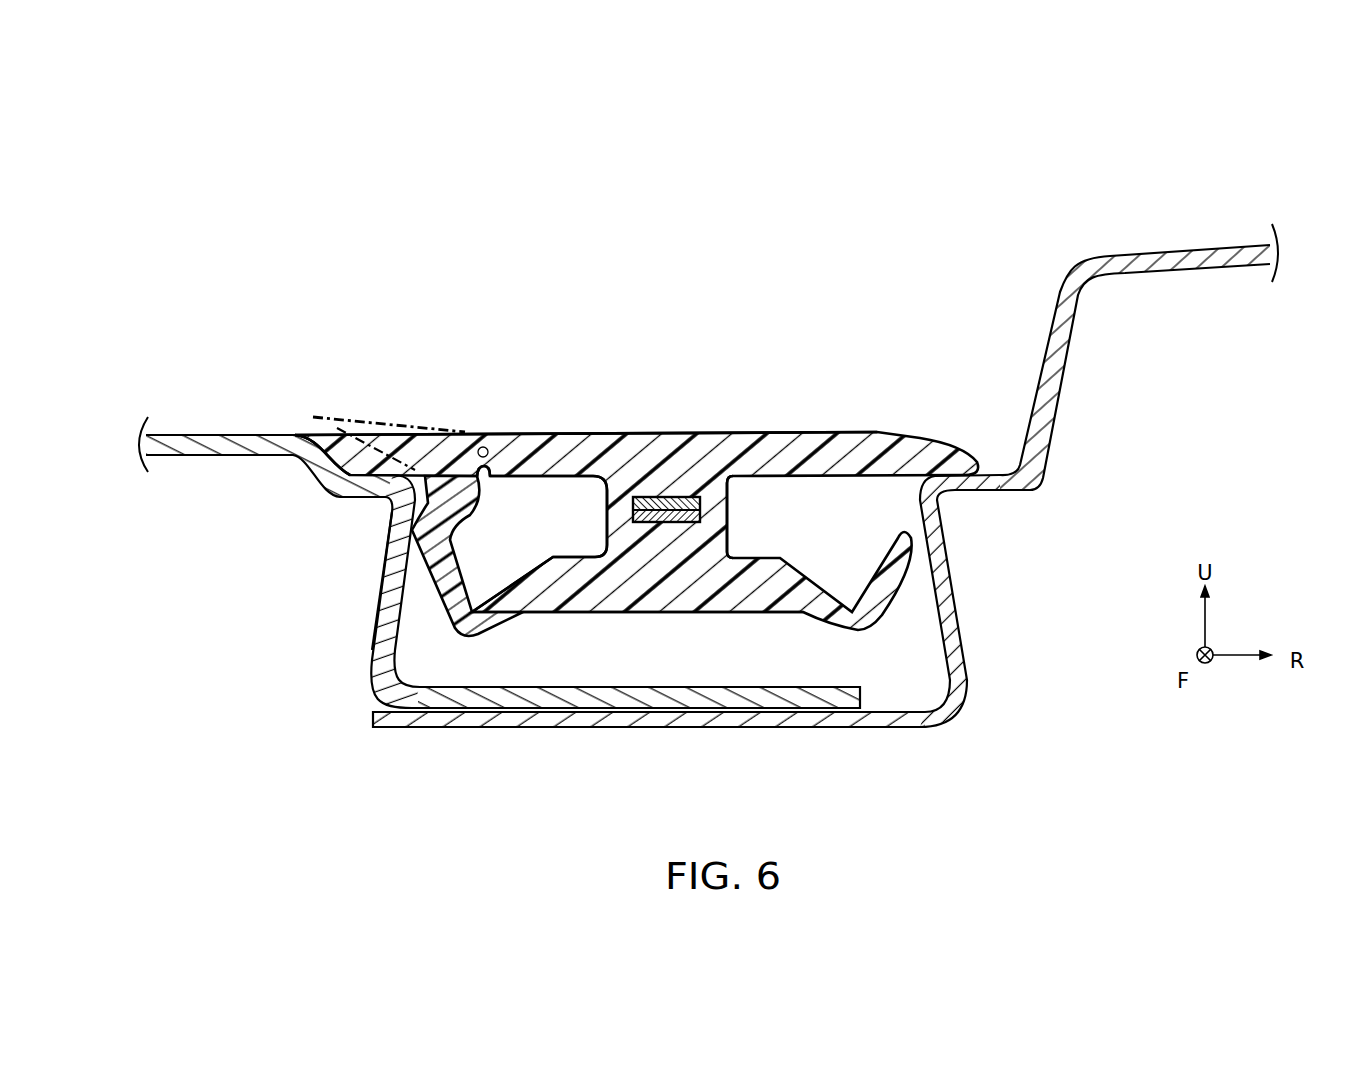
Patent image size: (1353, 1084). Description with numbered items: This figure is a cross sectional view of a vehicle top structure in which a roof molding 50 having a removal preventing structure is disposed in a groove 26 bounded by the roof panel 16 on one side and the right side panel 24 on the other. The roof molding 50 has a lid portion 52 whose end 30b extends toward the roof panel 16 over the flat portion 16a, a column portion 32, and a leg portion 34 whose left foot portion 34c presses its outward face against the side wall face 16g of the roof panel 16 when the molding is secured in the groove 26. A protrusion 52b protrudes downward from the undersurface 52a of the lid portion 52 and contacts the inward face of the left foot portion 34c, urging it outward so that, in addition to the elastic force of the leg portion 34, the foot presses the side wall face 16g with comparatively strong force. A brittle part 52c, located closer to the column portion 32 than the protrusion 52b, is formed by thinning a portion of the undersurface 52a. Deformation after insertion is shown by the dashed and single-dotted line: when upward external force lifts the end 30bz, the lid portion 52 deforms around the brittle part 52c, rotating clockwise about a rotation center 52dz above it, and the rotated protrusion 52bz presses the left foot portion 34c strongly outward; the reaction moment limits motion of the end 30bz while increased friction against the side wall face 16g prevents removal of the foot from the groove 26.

The roof panel 16 is at (170, 434).
The flat portion of floor panel 16a is at (191, 434).
The side wall face 16g is at (406, 645).
The right side panel 24 is at (1256, 248).
The groove 26 is at (664, 673).
The end 30b is at (307, 434).
The end (after deformation) 30bz is at (313, 415).
The column portion 32 is at (733, 506).
The leg portion 34 is at (690, 615).
The left foot portion 34c is at (408, 604).
The roof molding 50 is at (718, 434).
The lid portion 52 is at (622, 432).
The undersurface 52a is at (533, 476).
The protrusion 52b is at (452, 522).
The protrusion (after deformation) 52bz is at (425, 512).
The brittle part 52c is at (490, 476).
The rotation center 52dz is at (478, 468).